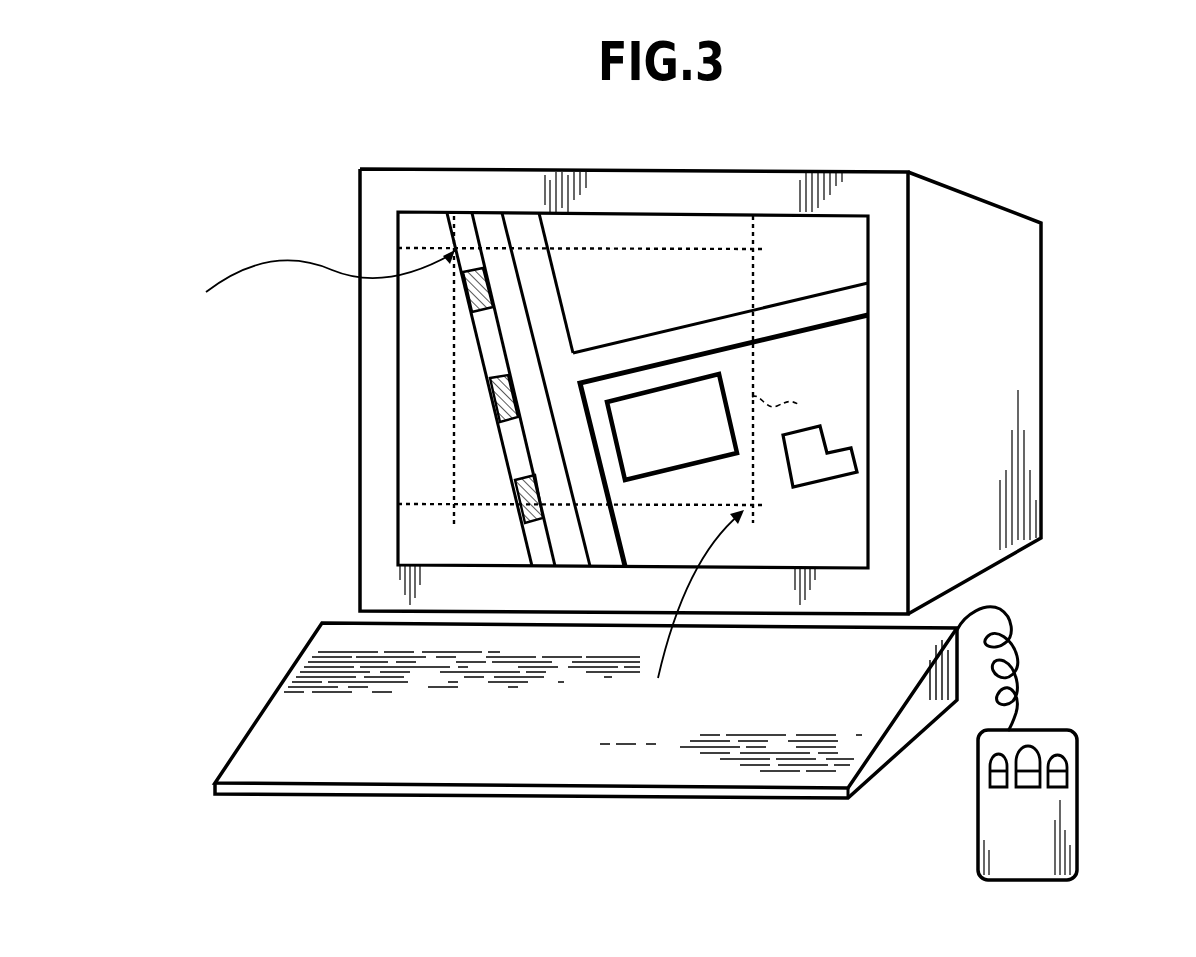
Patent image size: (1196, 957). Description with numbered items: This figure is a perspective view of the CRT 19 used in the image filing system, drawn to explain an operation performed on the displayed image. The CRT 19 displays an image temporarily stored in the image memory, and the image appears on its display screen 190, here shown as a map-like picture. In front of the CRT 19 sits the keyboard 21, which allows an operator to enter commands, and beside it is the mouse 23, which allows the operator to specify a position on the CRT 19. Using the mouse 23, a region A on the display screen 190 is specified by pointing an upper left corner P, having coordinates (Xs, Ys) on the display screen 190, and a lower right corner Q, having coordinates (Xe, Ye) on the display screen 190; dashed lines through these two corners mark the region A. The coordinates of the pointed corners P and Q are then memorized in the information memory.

The CRT 19 is at (1042, 246).
The display screen 190 is at (790, 243).
The keyboard 21 is at (673, 801).
The mouse 23 is at (1077, 797).